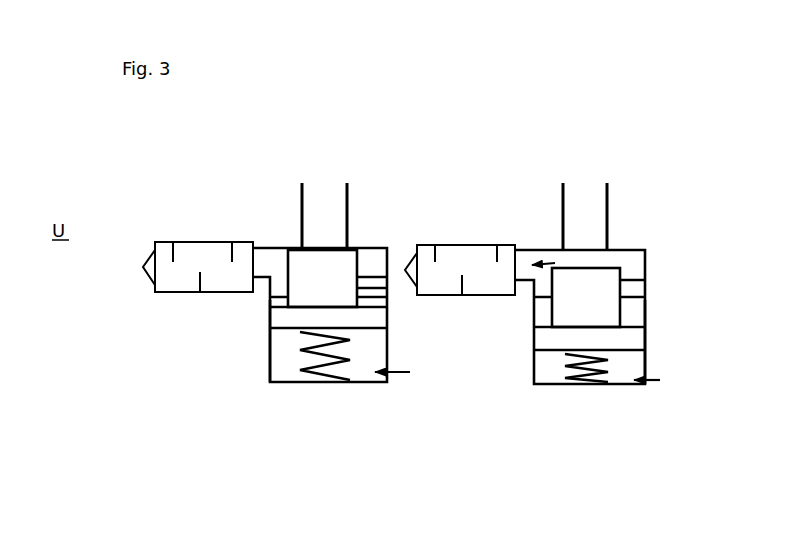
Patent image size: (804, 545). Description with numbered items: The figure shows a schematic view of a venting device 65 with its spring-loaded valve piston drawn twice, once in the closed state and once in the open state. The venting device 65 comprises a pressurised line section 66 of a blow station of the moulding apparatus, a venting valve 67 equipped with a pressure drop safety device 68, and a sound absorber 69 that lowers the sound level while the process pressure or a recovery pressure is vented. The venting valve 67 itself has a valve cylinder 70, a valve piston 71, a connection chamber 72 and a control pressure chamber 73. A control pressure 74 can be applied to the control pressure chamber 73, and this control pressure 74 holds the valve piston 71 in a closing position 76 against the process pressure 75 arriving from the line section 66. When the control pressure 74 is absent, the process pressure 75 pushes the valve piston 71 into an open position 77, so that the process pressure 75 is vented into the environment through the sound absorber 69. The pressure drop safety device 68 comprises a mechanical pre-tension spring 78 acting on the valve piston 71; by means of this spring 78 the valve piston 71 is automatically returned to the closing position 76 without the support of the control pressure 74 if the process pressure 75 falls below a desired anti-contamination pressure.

The venting device 65 is at (197, 410).
The pressurised line section 66 is at (347, 195).
The venting valve 67 is at (377, 248).
The pressure drop safety device 68 is at (252, 350).
The sound absorber 69 is at (165, 292).
The valve cylinder 70 is at (268, 363).
The valve piston 71 is at (334, 283).
The connection chamber 72 is at (278, 262).
The control pressure chamber 73 is at (362, 353).
The control pressure 74 is at (410, 372).
The process pressure 75 is at (320, 236).
The closing position 76 is at (355, 97).
The open position 77 is at (623, 112).
The mechanical pre-tension spring 78 is at (298, 382).